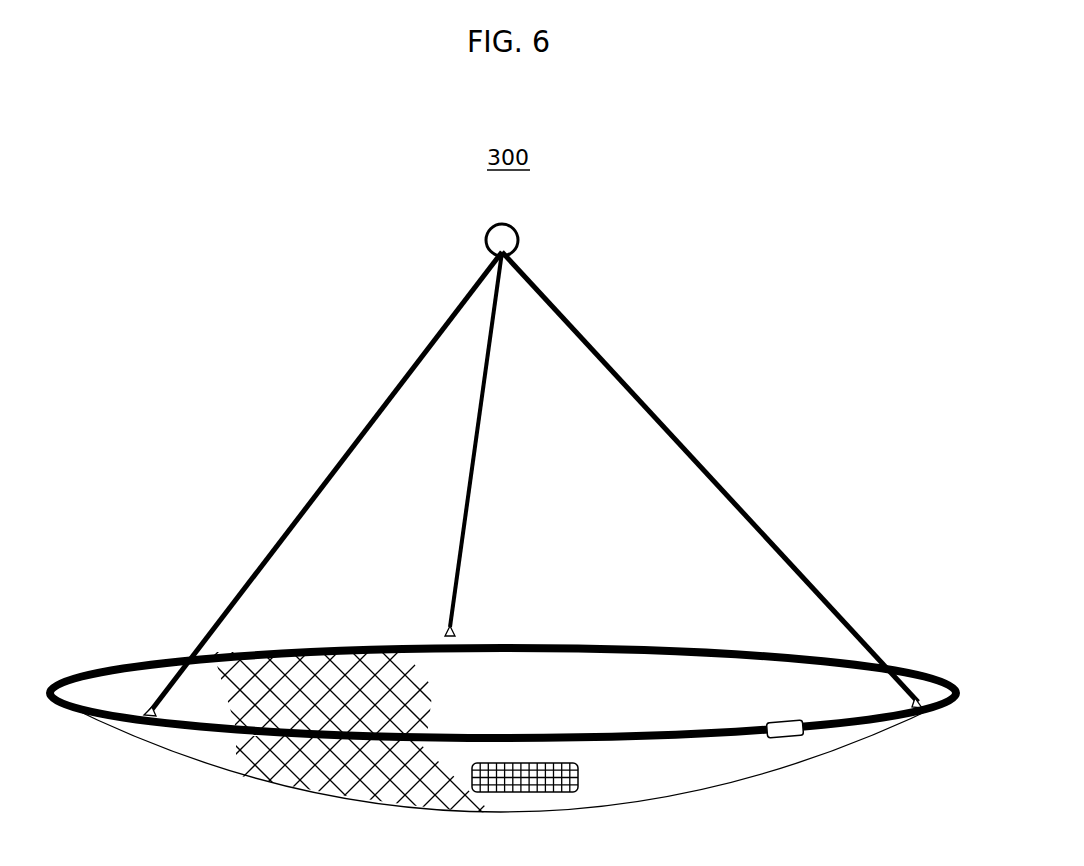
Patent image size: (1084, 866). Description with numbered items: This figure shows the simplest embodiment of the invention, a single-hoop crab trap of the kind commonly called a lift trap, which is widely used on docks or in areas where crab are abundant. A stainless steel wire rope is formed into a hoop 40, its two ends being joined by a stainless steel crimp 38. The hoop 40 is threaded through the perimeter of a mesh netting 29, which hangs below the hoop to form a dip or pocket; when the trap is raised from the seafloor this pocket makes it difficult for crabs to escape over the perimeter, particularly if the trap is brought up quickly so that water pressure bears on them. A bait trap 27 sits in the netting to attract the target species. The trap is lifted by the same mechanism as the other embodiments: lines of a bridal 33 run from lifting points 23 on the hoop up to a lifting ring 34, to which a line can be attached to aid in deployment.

The lifting ring 34 is at (519, 241).
The bridal 33 is at (700, 448).
The lifting points 23 is at (446, 583).
The hoop 40 is at (117, 660).
The mesh netting 29 is at (301, 691).
The stainless steel crimp 38 is at (775, 720).
The bait trap 27 is at (582, 776).